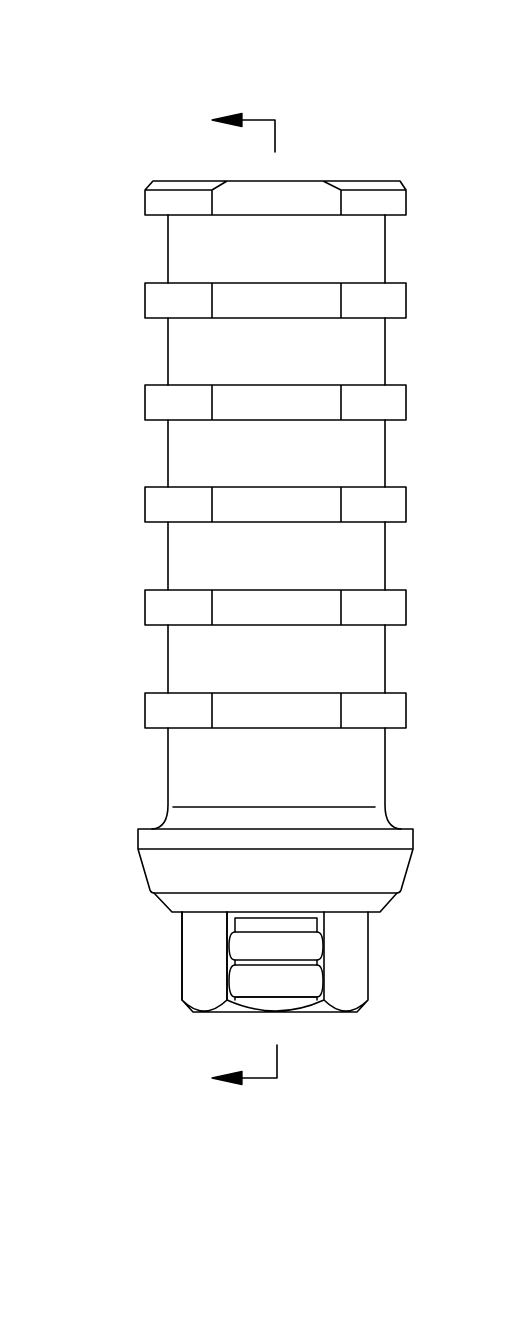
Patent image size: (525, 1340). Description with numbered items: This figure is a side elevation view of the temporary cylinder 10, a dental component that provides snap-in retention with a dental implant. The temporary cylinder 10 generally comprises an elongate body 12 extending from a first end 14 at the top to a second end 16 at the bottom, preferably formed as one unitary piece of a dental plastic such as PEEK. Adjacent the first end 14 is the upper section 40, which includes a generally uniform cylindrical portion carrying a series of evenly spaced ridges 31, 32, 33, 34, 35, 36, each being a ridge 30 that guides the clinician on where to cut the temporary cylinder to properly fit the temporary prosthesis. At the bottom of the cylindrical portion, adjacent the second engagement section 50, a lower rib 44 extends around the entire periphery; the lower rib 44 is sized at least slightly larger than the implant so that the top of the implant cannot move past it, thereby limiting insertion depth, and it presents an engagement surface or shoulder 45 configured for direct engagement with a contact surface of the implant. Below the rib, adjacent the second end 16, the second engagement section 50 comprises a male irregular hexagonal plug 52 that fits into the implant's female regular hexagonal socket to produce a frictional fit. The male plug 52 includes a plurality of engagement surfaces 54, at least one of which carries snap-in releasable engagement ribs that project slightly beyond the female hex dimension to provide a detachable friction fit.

The temporary cylinder 10 is at (470, 88).
The elongate body 12 is at (456, 465).
The first end 14 is at (150, 145).
The second end 16 is at (120, 1048).
The ridge 30 is at (124, 205).
The ridge 31 is at (392, 201).
The ridge 32 is at (392, 304).
The ridge 33 is at (392, 401).
The ridge 34 is at (392, 503).
The ridge 35 is at (392, 606).
The ridge 36 is at (392, 708).
The upper section 40 is at (82, 497).
The lower rib 44 is at (387, 868).
The engagement surface or shoulder 45 is at (377, 902).
The second engagement section 50 is at (425, 963).
The male irregular hexagonal plug 52 is at (368, 1000).
The engagement surfaces 54 is at (202, 970).